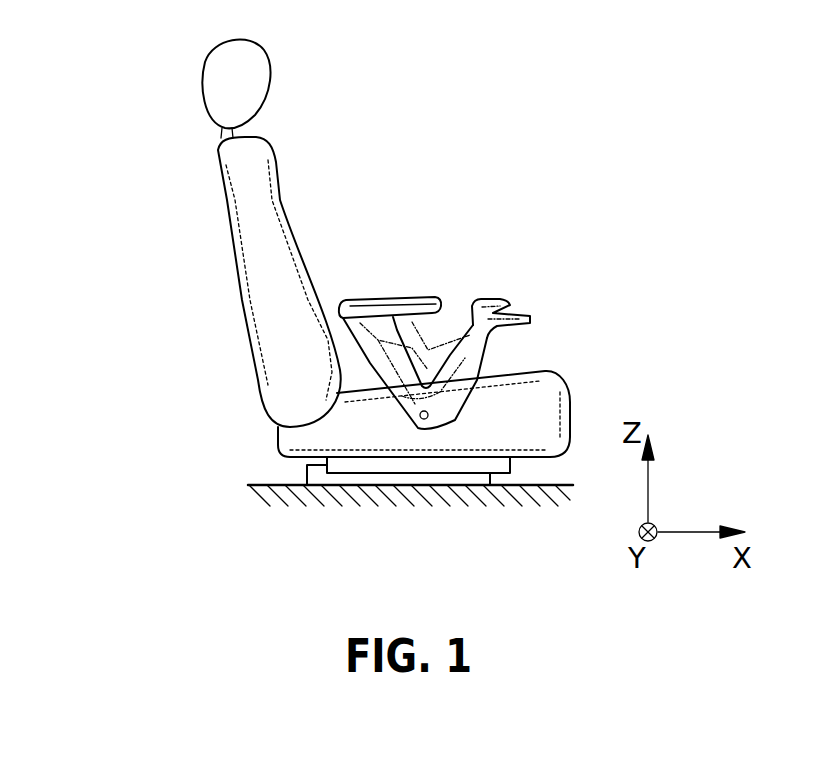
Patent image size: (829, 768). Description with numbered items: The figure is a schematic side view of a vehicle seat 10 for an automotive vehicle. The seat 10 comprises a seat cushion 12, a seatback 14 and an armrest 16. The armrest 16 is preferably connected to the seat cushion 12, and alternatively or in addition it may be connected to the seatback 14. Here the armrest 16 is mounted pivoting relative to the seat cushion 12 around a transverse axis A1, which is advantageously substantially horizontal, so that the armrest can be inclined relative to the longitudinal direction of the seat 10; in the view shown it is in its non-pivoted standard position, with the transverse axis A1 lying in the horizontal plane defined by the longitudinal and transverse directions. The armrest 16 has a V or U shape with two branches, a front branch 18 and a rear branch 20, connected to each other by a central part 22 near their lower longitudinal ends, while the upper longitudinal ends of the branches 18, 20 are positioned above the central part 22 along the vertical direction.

The vehicle seat 10 is at (148, 72).
The seat cushion 12 is at (538, 397).
The seatback 14 is at (262, 275).
The armrest 16 is at (525, 205).
The front branch 18 is at (475, 343).
The rear branch 20 is at (382, 332).
The central part 22 is at (427, 387).
The transverse axis A1 is at (422, 420).